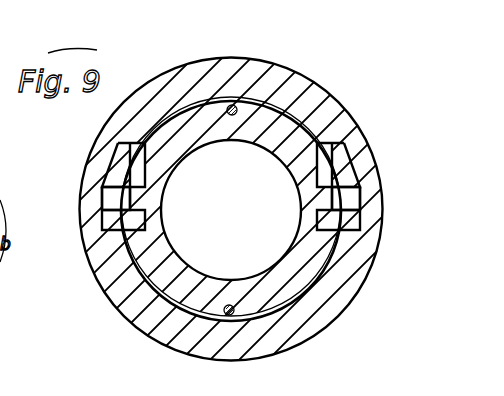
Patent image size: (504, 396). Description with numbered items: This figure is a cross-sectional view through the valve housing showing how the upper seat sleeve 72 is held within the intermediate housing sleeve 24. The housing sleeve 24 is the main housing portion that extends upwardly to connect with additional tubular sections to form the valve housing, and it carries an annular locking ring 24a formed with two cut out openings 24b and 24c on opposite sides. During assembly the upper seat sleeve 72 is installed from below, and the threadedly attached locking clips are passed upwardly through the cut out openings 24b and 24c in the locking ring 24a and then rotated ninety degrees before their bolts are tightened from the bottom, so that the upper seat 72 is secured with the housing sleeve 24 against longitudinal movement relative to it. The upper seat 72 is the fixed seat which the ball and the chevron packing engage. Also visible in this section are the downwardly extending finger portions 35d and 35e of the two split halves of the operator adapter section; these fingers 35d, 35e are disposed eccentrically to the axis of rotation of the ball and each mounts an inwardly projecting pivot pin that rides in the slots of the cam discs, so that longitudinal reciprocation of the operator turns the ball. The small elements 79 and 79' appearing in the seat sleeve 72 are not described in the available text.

The intermediate housing sleeve 24 is at (159, 80).
The annular locking ring 24a is at (165, 288).
The cut out opening 24b is at (104, 198).
The cut out opening 24c is at (358, 200).
The downwardly extending finger portion 35d is at (116, 163).
The downwardly extending finger portion 35e is at (342, 162).
The upper seat sleeve 72 is at (262, 120).
The pin 79 is at (239, 67).
The pin 79' is at (255, 347).